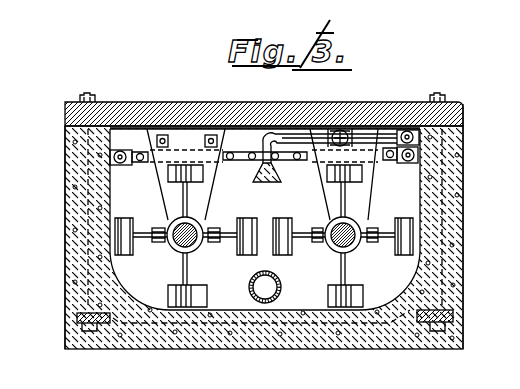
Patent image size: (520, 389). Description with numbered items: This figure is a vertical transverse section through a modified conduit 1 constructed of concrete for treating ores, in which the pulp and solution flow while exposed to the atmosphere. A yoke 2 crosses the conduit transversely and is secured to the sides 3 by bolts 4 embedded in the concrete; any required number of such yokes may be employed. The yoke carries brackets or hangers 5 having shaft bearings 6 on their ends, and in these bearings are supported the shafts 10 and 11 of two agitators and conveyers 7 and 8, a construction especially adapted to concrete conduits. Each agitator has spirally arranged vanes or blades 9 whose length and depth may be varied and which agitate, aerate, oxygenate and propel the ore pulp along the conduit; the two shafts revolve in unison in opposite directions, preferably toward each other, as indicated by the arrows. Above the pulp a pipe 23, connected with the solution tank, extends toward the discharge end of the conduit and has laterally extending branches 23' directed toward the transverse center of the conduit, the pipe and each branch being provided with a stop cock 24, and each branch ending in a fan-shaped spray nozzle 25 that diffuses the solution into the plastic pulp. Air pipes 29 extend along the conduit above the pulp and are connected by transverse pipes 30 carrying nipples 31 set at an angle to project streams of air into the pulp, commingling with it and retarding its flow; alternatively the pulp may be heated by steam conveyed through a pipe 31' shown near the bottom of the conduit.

The conduit 1 is at (410, 177).
The yokes 2 is at (150, 104).
The sides 3 is at (67, 210).
The bolts 4 is at (85, 238).
The brackets or hangers 5 is at (128, 194).
The shaft bearings 6 is at (162, 244).
The agitator and conveyer 7 is at (194, 247).
The agitator and conveyer 8 is at (334, 246).
The vanes or blades 9 is at (112, 243).
The shaft 10 is at (200, 223).
The shaft 11 is at (330, 220).
The pipe 23 is at (484, 118).
The branches 23' is at (262, 85).
The stop cock 24 is at (385, 106).
The spray nozzle 25 is at (268, 186).
The pipes 29 is at (110, 153).
The transverse pipes 30 is at (313, 144).
The nipples 31 is at (264, 170).
The pipe 31' is at (234, 326).